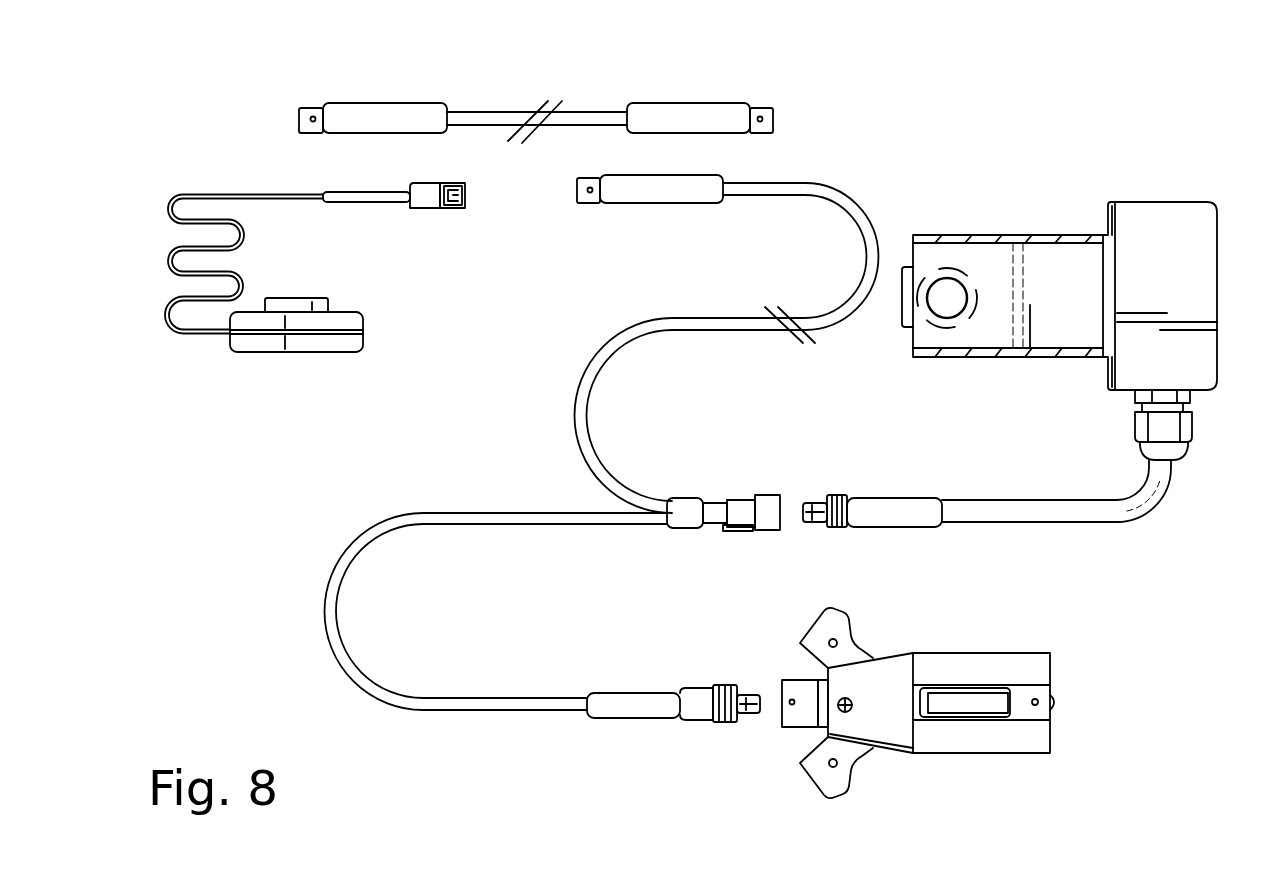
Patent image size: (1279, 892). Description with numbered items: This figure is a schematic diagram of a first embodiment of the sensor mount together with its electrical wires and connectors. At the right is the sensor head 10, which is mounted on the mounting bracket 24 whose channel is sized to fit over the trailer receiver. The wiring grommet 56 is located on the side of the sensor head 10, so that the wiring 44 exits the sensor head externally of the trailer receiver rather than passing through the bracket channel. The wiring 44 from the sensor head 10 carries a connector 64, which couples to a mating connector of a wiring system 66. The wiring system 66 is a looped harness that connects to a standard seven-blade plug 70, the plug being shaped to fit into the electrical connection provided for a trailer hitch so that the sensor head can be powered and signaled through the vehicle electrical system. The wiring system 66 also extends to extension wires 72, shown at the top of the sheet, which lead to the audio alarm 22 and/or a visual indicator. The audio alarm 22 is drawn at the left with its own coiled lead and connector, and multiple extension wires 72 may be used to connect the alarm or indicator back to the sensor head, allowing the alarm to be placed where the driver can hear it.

The sensor head 10 is at (1186, 291).
The audio alarm 22 is at (357, 311).
The mounting bracket 24 is at (1046, 278).
The wiring 44 is at (1165, 497).
The wiring grommet 56 is at (1188, 423).
The connector 64 is at (882, 518).
The wiring system 66 is at (565, 497).
The seven-blade plug 70 is at (1010, 663).
The extension wires 72 is at (563, 125).